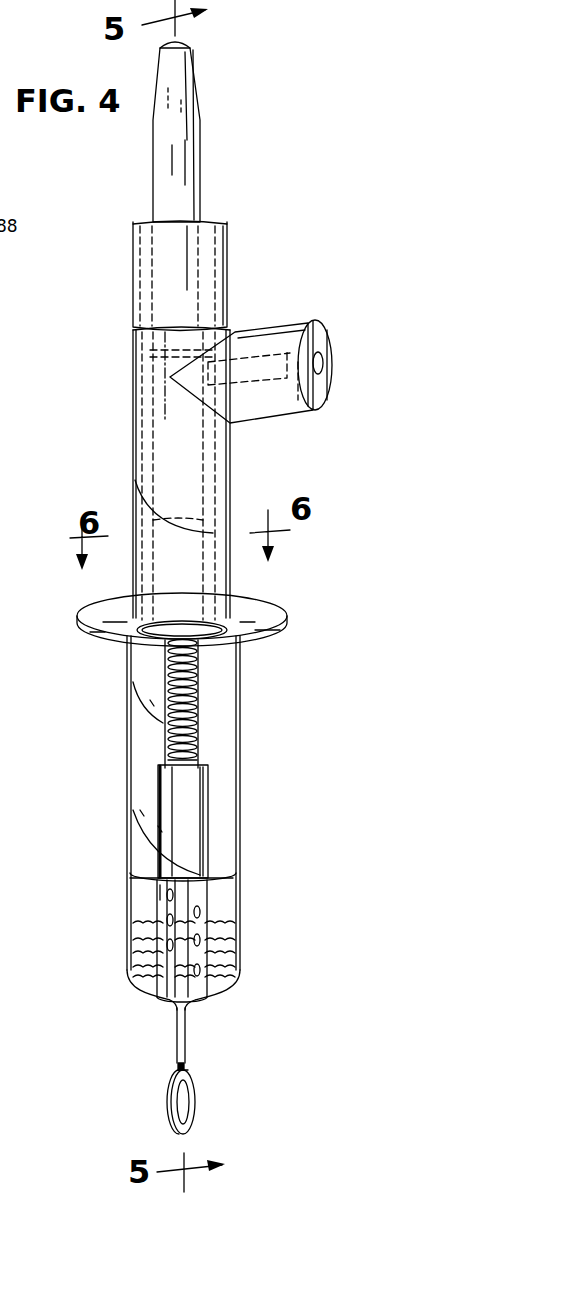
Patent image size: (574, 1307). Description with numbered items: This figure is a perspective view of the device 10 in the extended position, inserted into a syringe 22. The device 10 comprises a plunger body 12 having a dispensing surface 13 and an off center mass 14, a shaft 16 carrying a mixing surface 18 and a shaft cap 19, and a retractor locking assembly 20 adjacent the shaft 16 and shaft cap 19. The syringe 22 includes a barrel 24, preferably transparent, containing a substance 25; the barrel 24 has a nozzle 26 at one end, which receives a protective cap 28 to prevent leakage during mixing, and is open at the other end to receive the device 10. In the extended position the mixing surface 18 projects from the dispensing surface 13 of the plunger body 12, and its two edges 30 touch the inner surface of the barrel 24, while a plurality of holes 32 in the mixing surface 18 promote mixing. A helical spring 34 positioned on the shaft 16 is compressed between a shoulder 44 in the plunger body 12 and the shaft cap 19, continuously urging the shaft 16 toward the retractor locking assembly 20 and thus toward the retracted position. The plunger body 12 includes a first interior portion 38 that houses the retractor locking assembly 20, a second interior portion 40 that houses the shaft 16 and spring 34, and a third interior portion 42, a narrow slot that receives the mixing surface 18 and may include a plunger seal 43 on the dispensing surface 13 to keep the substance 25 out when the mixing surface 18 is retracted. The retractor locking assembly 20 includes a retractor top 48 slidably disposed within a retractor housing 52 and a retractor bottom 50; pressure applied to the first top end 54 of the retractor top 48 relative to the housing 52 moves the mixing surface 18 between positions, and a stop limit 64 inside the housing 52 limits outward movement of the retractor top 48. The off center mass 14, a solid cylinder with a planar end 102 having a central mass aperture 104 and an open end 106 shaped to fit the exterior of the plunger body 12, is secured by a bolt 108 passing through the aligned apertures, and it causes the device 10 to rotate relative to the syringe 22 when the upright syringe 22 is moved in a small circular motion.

The device 10 is at (95, 778).
The plunger body 12 is at (237, 838).
The dispensing surface 13 is at (220, 878).
The off center mass 14 is at (278, 325).
The shaft 16 is at (192, 712).
The mixing surface 18 is at (200, 897).
The shaft cap 19 is at (200, 630).
The retractor locking assembly 20 is at (214, 188).
The syringe 22 is at (144, 1080).
The barrel 24 is at (242, 945).
The substance 25 is at (220, 997).
The nozzle 26 is at (185, 1032).
The protective cap 28 is at (194, 1102).
The edges 30 is at (160, 920).
The holes 32 is at (200, 945).
The helical spring 34 is at (197, 733).
The first interior portion 38 is at (235, 585).
The second interior portion 40 is at (198, 700).
The third interior portion 42 is at (206, 783).
The plunger seal 43 is at (160, 893).
The shoulder 44 is at (195, 750).
The retractor top 48 is at (195, 77).
The retractor bottom 50 is at (217, 563).
The retractor housing 52 is at (215, 475).
The first top end 54 is at (183, 40).
The stop limit 64 is at (133, 323).
The planar end 102 is at (306, 340).
The mass aperture 104 is at (322, 366).
The open end 106 is at (187, 397).
The bolt 108 is at (302, 410).